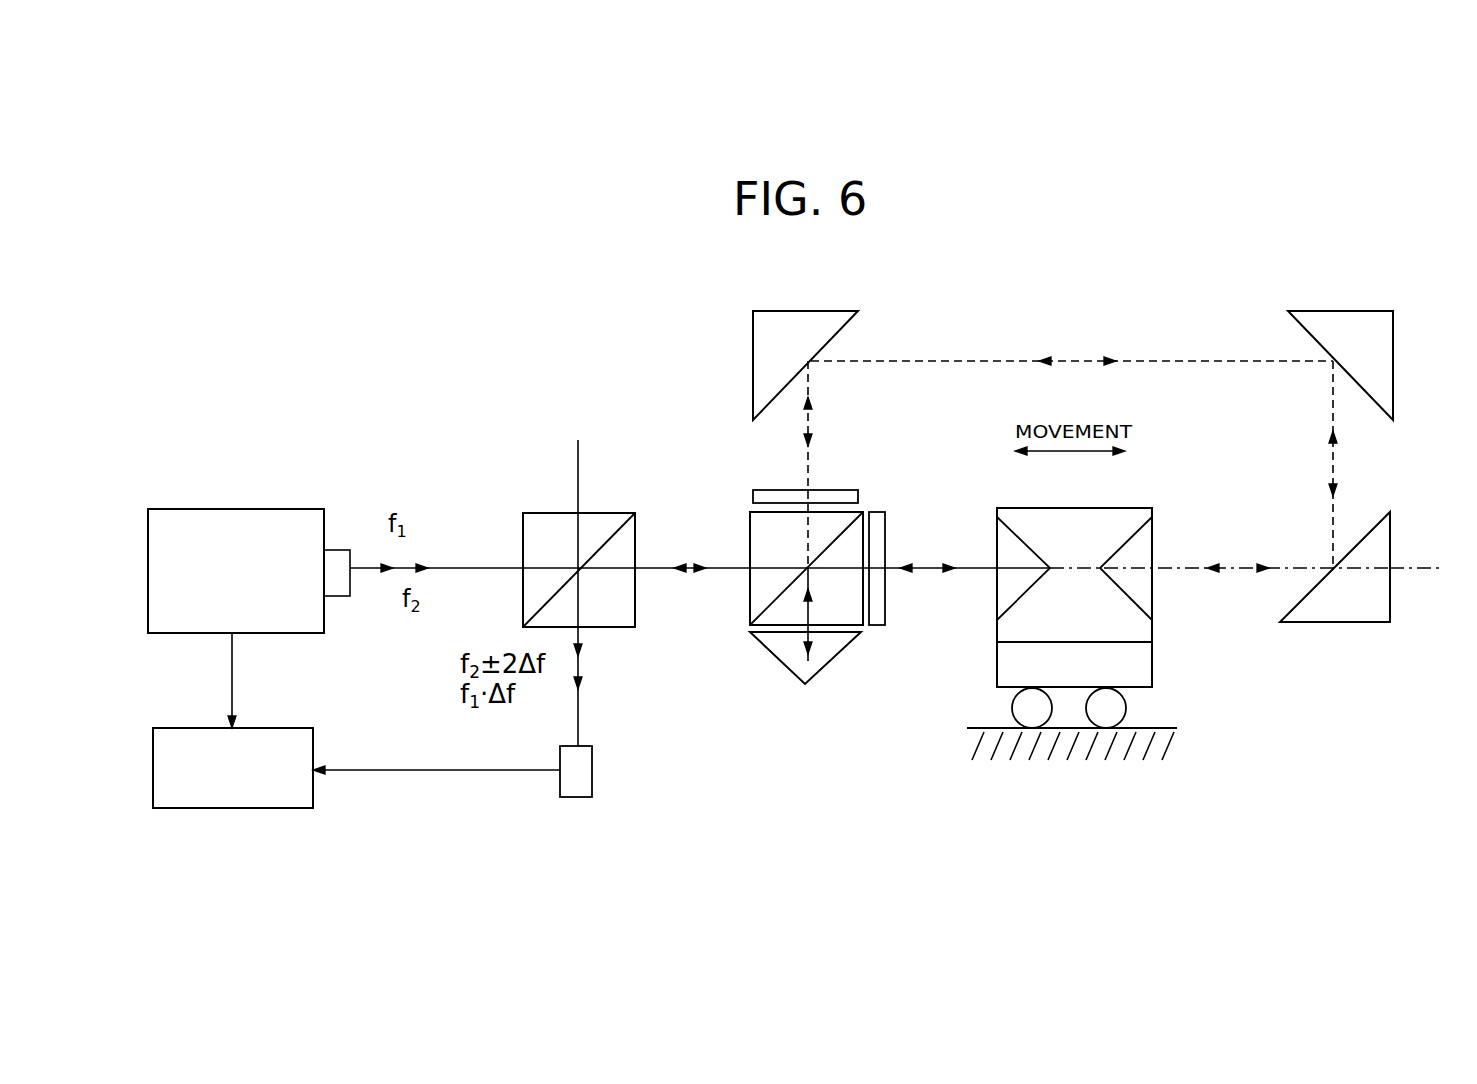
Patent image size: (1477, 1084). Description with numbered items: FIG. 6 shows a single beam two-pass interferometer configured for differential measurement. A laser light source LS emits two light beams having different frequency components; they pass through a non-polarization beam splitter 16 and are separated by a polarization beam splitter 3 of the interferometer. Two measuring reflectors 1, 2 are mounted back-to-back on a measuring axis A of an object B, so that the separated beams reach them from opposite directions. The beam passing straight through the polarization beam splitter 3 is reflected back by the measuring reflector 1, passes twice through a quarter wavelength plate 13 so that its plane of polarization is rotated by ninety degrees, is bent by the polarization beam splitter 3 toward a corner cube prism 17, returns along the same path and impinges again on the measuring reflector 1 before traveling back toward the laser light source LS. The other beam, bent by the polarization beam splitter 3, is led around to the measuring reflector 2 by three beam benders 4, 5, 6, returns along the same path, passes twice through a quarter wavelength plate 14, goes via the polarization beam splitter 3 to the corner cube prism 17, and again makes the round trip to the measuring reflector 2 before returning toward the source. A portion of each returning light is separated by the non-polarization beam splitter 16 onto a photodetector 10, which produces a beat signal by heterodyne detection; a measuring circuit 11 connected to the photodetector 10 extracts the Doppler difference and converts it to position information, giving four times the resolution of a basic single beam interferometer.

The laser light source LS is at (293, 510).
The measuring circuit 11 is at (300, 728).
The non-polarization beam splitter 16 is at (538, 513).
The photodetector 10 is at (583, 766).
The quarter wavelength plate 14 is at (752, 498).
The polarization beam splitter 3 is at (750, 592).
The quarter wavelength plate 13 is at (879, 528).
The corner cube prism 17 is at (818, 663).
The beam bender 4 is at (793, 353).
The beam bender 5 is at (1371, 356).
The beam bender 6 is at (1365, 592).
The measuring reflector 1 is at (1020, 530).
The measuring reflector 2 is at (1122, 540).
The object B is at (1145, 665).
The measuring axis A is at (1428, 569).